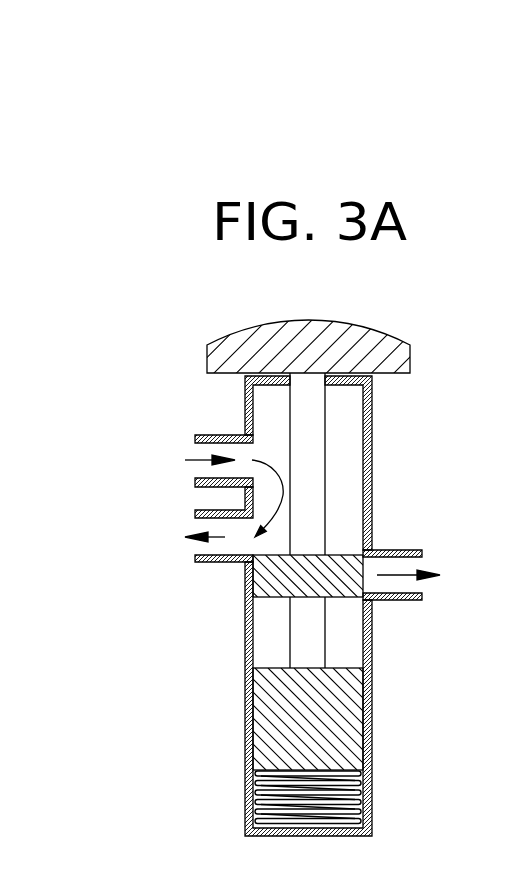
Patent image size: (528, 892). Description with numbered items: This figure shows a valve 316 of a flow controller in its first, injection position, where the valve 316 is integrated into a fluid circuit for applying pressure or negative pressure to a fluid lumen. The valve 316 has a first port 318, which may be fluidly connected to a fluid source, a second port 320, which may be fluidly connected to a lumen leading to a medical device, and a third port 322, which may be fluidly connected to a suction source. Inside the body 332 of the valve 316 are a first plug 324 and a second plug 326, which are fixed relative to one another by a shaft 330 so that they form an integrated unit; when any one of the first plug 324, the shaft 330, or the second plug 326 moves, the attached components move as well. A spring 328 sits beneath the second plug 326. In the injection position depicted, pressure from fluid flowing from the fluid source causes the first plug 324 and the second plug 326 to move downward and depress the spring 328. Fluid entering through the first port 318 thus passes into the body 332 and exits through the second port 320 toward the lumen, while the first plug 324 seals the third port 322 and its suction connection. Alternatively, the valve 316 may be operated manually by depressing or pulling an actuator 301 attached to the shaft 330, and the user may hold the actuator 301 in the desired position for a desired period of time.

The actuator 301 is at (252, 343).
The valve 316 is at (452, 347).
The first port 318 is at (237, 452).
The second port 320 is at (228, 548).
The third port 322 is at (393, 567).
The first plug 324 is at (345, 590).
The second plug 326 is at (343, 720).
The spring 328 is at (362, 792).
The shaft 330 is at (305, 633).
The body 332 is at (345, 440).